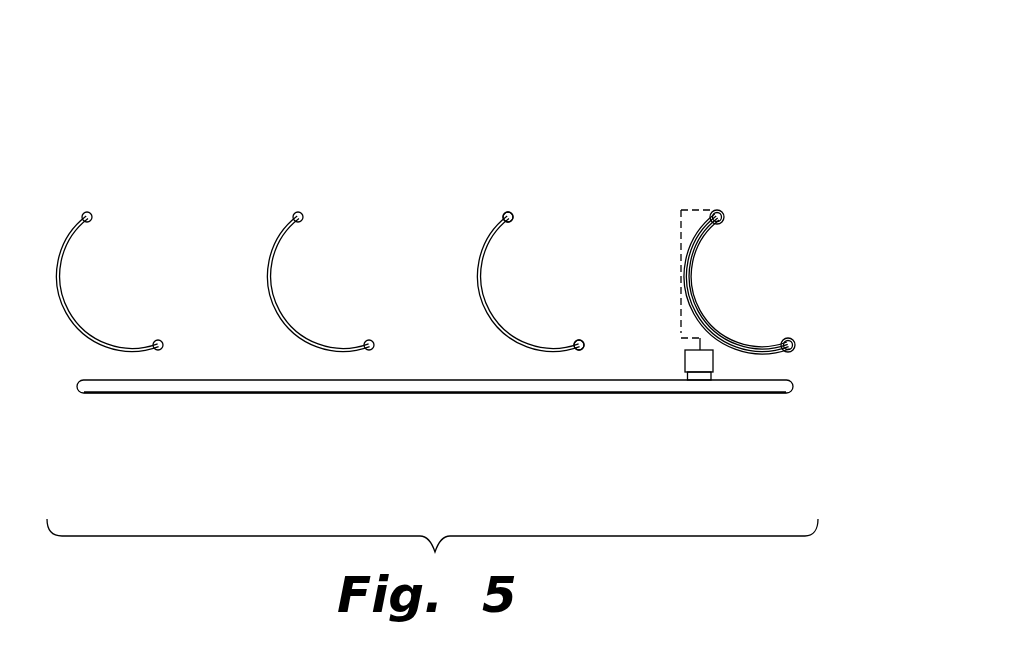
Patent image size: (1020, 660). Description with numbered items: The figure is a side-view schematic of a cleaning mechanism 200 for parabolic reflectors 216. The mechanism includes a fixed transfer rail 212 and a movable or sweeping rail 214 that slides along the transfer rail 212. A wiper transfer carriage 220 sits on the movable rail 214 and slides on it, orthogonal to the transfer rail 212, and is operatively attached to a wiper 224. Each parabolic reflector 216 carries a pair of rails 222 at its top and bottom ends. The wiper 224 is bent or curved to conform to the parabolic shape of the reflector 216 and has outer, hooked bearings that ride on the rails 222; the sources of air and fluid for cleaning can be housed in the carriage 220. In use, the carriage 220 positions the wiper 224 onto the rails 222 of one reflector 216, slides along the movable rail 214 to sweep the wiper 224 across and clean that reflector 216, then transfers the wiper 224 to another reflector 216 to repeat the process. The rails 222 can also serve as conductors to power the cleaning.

The cleaning mechanism 200 is at (603, 89).
The fixed transfer rail 212 is at (552, 393).
The movable rail 214 is at (712, 375).
The parabolic reflector 216 is at (483, 275).
The wiper transfer carriage 220 is at (713, 360).
The rails 222 is at (512, 216).
The wiper 224 is at (700, 278).